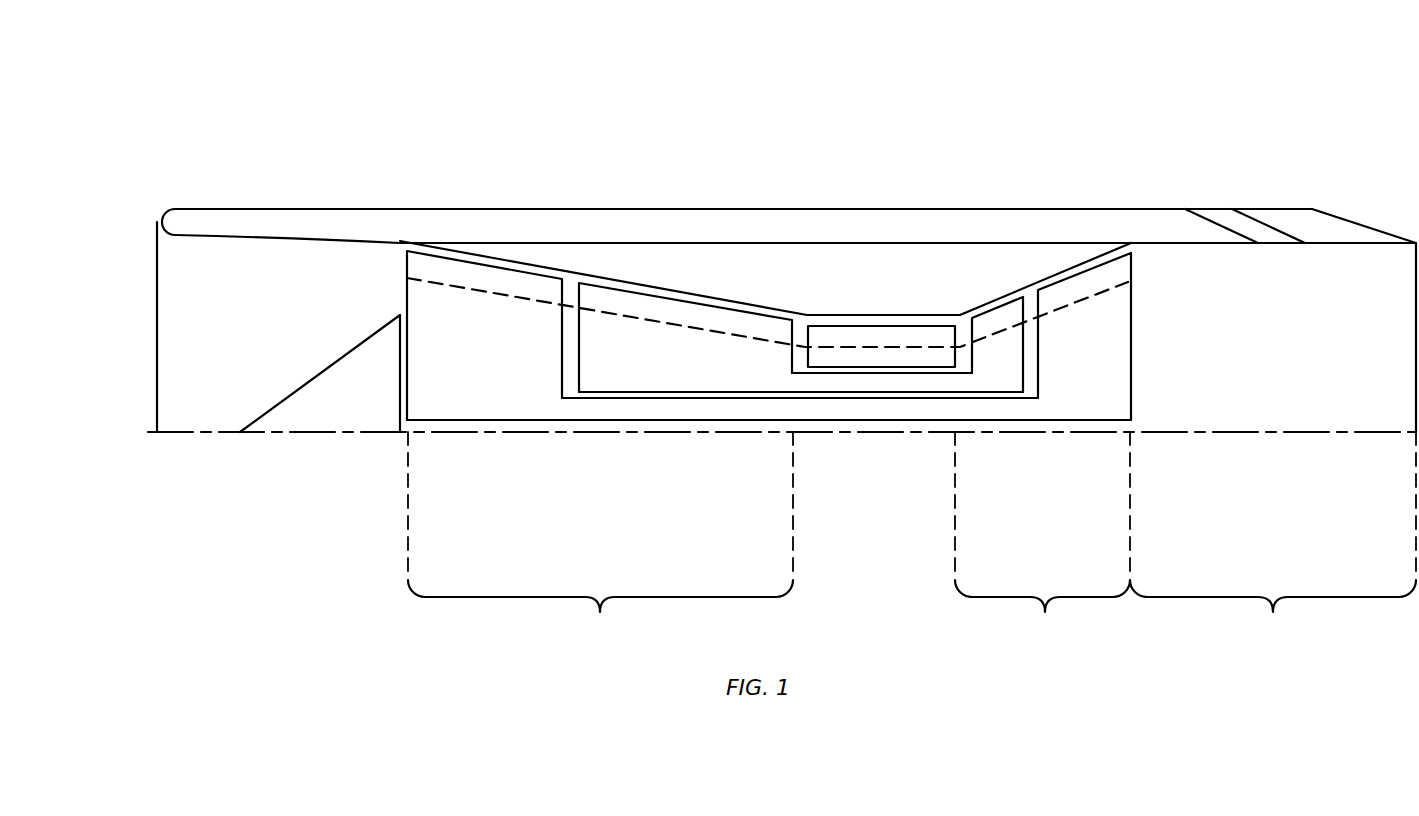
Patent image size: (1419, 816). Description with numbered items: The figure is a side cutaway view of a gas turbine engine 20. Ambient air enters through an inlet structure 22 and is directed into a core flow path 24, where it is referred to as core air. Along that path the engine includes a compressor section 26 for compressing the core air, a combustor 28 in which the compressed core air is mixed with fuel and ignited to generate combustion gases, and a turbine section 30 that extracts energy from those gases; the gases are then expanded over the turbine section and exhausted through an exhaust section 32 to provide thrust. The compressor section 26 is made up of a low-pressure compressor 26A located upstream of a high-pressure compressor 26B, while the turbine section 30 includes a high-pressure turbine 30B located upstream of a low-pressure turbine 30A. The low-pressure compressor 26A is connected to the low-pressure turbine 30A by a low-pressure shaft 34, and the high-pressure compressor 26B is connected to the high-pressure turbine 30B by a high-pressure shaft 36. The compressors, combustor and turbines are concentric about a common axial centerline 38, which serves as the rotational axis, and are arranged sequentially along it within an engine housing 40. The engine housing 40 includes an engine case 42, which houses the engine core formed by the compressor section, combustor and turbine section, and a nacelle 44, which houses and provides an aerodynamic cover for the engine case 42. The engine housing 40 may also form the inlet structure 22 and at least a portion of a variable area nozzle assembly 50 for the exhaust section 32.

The gas turbine engine 20 is at (1275, 92).
The inlet structure 22 is at (155, 220).
The core flow path 24 is at (487, 292).
The compressor section 26 is at (600, 536).
The low-pressure compressor 26A is at (454, 377).
The high-pressure compressor 26B is at (631, 368).
The combustor 28 is at (877, 358).
The turbine section 30 is at (1042, 535).
The low-pressure turbine 30A is at (1088, 373).
The high-pressure turbine 30B is at (1000, 372).
The exhaust section 32 is at (1273, 535).
The low-pressure shaft 34 is at (917, 412).
The high-pressure shaft 36 is at (823, 383).
The axial centerline 38 is at (169, 432).
The engine housing 40 is at (1057, 195).
The engine case 42 is at (662, 243).
The nacelle 44 is at (825, 210).
The variable area nozzle assembly 50 is at (1342, 210).